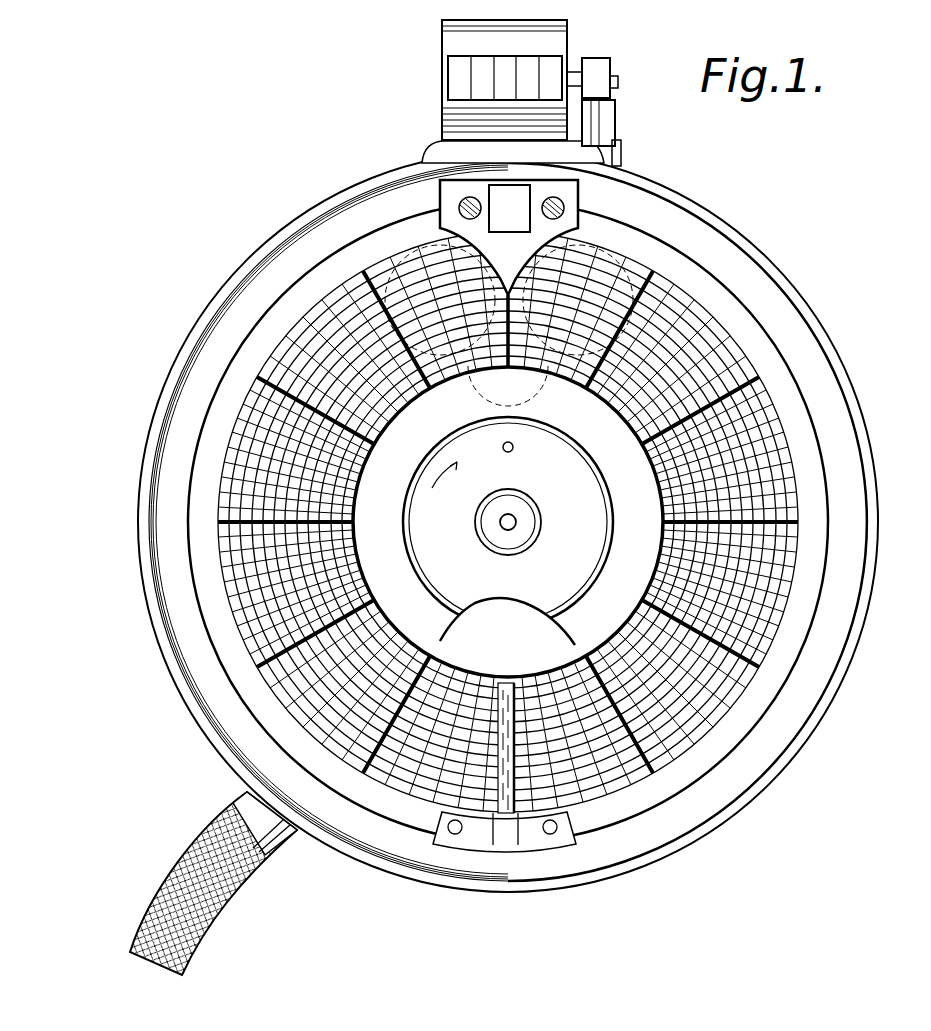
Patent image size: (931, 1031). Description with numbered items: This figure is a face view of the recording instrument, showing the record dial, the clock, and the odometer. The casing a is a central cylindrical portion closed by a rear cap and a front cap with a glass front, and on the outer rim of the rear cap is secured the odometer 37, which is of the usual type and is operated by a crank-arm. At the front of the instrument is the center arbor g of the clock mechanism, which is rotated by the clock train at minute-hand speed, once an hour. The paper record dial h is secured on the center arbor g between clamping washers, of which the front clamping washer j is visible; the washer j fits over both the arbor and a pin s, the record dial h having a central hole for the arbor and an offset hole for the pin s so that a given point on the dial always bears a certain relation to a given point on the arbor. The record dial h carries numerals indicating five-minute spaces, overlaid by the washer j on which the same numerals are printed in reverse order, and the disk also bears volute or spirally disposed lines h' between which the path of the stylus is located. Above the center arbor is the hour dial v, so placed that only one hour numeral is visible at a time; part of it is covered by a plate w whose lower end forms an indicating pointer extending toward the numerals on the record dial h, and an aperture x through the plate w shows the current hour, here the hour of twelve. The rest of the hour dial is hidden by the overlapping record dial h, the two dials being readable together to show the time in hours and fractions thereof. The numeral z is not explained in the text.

The odometer 37 is at (434, 50).
The hour dial v is at (478, 190).
The aperture x is at (532, 184).
The plate w is at (509, 273).
The casing a is at (200, 369).
The volute or spirally disposed lines h' is at (453, 522).
The clamping washer j is at (612, 633).
The record dial h is at (443, 753).
The center arbor g is at (502, 527).
The center pivot z is at (537, 514).
The pin s is at (514, 447).